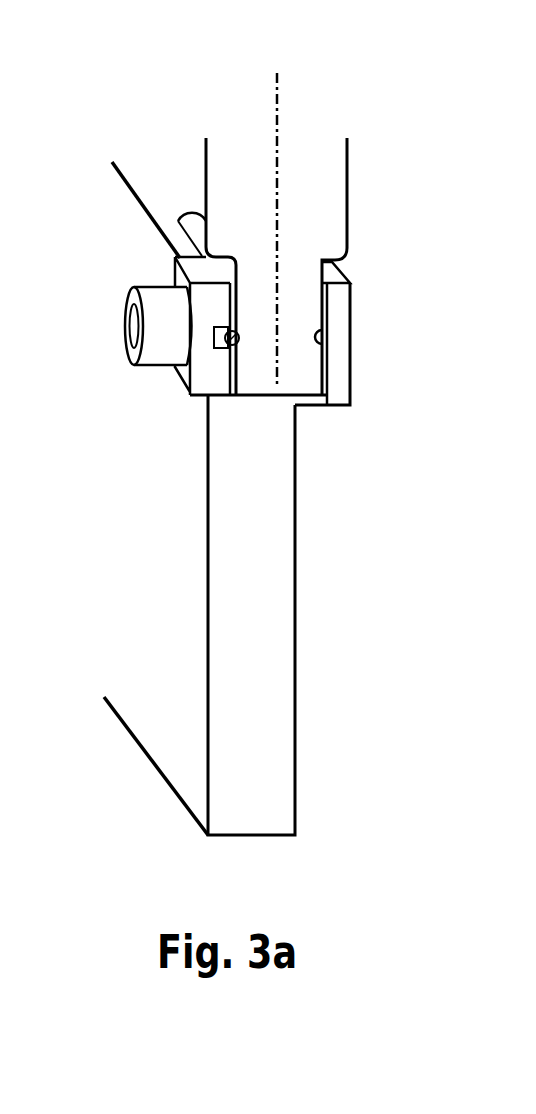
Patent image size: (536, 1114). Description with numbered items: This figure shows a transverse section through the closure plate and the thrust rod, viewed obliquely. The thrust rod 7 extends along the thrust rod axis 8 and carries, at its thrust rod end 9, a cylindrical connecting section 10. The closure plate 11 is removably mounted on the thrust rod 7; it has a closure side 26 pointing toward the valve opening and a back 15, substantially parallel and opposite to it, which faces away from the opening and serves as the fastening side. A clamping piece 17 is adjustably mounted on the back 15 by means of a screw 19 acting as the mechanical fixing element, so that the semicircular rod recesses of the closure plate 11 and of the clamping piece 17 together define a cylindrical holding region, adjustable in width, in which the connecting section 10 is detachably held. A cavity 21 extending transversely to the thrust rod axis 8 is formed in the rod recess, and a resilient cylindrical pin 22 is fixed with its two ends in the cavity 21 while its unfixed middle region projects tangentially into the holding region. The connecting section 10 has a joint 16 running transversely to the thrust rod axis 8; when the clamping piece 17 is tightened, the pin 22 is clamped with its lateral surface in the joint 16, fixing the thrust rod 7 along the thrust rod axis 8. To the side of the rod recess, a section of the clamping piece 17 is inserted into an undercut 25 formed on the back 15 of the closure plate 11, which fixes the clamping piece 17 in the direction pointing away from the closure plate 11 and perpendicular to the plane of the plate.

The thrust rod 7 is at (310, 153).
The thrust rod axis 8 is at (277, 115).
The thrust rod end 9 is at (382, 316).
The connecting section 10 is at (297, 317).
The closure plate 11 is at (263, 647).
The back 15 is at (158, 529).
The joint 16 is at (313, 337).
The clamping piece 17 is at (198, 272).
The screw 19 is at (160, 305).
The cavity 21 is at (224, 346).
The resilient cylindrical pin 22 is at (216, 341).
The undercut 25 is at (180, 219).
The closure side 26 is at (334, 531).